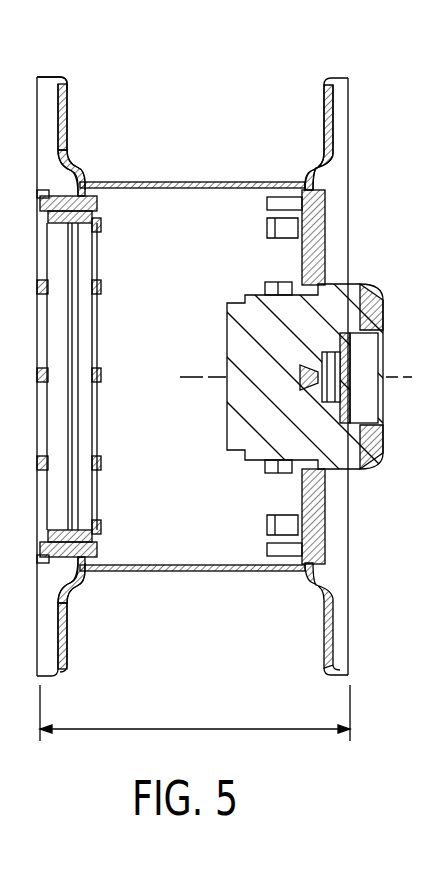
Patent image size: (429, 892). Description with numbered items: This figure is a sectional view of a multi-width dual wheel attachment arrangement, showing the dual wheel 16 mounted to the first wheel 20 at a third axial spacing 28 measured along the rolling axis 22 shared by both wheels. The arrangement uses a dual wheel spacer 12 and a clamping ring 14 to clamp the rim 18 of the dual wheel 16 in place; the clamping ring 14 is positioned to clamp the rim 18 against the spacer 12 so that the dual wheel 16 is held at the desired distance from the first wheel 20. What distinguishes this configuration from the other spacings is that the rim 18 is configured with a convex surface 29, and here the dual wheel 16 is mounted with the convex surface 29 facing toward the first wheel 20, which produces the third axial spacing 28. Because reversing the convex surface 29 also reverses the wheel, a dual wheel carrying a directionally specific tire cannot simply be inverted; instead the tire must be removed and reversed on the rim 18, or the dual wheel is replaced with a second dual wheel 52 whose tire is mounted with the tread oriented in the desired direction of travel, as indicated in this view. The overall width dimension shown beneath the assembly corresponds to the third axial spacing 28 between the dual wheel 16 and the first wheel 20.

The dual wheel spacer 12 is at (228, 182).
The clamping ring 14 is at (60, 262).
The dual wheel 16 is at (67, 112).
The rim 18 is at (65, 140).
The first wheel 20 is at (331, 132).
The rolling axis 22 is at (203, 377).
The third axial spacing 28 is at (237, 729).
The convex surface 29 is at (75, 592).
The second dual wheel 52 is at (65, 80).